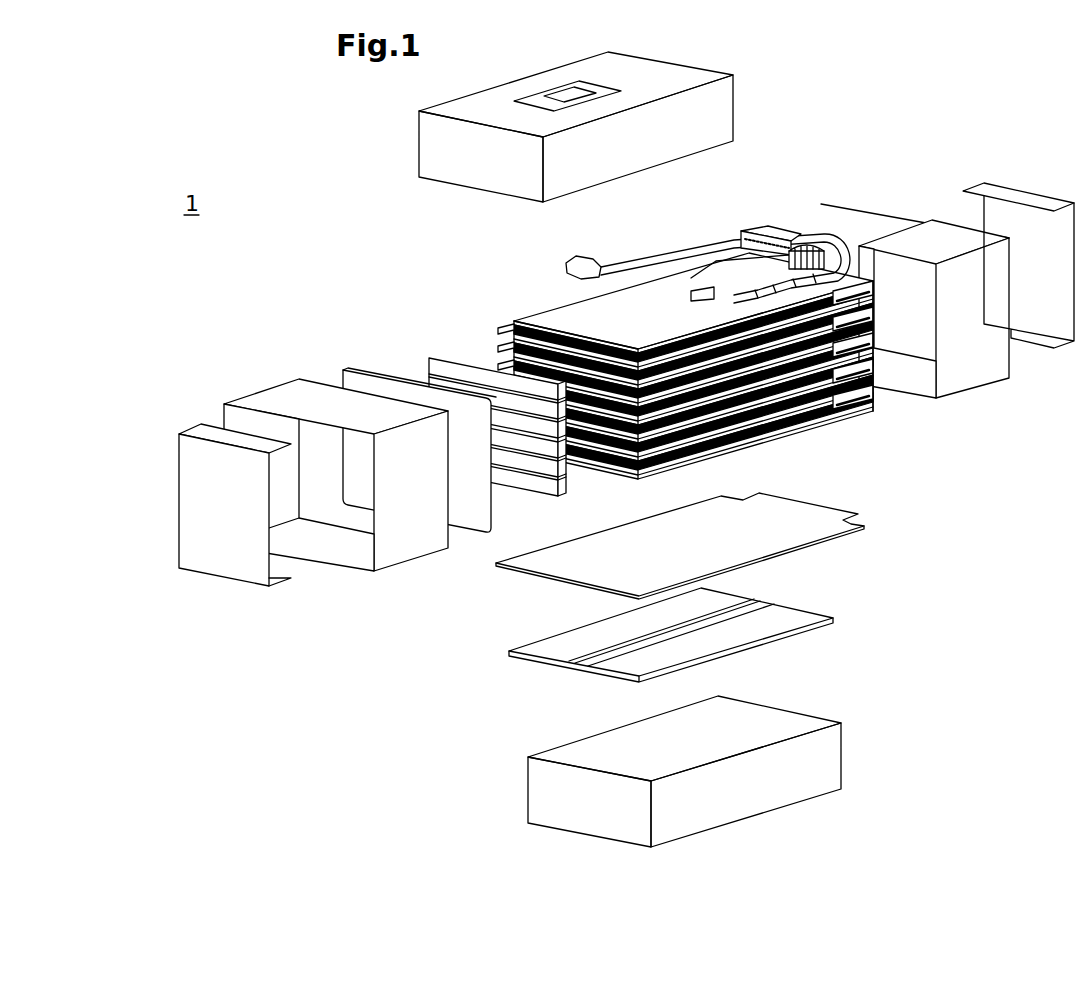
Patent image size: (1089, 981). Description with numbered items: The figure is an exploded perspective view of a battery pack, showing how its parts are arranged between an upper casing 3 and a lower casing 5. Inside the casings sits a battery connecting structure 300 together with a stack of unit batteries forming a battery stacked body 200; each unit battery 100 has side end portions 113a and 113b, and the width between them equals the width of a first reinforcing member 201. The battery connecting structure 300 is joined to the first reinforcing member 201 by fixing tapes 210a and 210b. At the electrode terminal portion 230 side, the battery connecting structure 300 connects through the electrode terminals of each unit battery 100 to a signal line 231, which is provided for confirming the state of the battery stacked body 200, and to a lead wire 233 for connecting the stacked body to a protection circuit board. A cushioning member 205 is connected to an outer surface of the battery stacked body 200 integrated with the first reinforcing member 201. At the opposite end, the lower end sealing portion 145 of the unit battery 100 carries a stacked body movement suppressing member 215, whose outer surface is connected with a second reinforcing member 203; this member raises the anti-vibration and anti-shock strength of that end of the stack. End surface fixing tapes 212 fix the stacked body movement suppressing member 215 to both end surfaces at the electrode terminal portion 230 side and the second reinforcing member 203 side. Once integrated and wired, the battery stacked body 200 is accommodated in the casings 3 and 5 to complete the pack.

The casing 3 is at (468, 152).
The casing 5 is at (545, 787).
The unit battery 100 is at (735, 339).
The side end portion 113a is at (872, 316).
The side end portion 113b is at (512, 320).
The lower end sealing portion 145 is at (628, 477).
The battery stacked body 200 is at (716, 569).
The first reinforcing member 201 is at (731, 542).
The second reinforcing member 203 is at (358, 368).
The cushioning member 205 is at (793, 615).
The fixing tape 210a is at (269, 402).
The fixing tape 210b is at (862, 232).
The end surface fixing tape 212 is at (1000, 190).
The stacked body movement suppressing member 215 is at (432, 350).
The electrode terminal portion 230 is at (888, 314).
The signal line 231 is at (768, 226).
The lead wire 233 is at (675, 252).
The battery connecting structure 300 is at (708, 235).